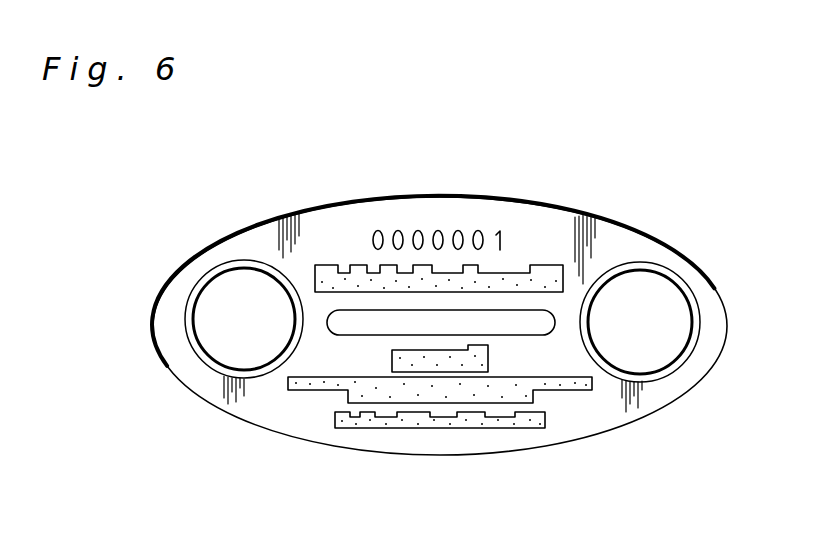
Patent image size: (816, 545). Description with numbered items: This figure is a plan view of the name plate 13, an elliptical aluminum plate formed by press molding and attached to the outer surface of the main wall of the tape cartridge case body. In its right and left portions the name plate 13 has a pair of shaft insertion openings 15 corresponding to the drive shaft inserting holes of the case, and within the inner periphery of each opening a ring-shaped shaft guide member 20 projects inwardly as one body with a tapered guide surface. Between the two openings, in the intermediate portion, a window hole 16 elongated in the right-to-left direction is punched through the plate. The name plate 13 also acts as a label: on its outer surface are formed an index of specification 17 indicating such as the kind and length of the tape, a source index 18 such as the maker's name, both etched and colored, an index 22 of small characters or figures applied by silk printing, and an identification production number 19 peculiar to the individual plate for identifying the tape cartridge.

The name plate 13 is at (583, 210).
The shaft insertion openings 15 is at (218, 288).
The window hole 16 is at (380, 325).
The index of specification 17 is at (322, 267).
The source index 18 is at (437, 362).
The identification production number 19 is at (480, 227).
The shaft guide member 20 is at (228, 372).
The index 22 is at (533, 398).